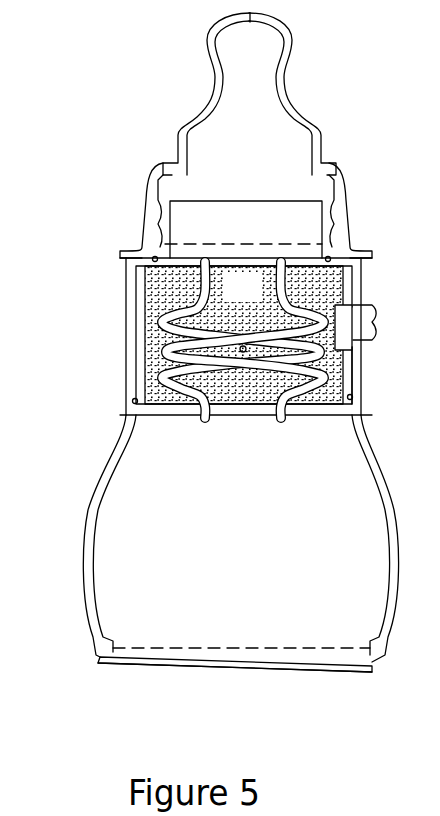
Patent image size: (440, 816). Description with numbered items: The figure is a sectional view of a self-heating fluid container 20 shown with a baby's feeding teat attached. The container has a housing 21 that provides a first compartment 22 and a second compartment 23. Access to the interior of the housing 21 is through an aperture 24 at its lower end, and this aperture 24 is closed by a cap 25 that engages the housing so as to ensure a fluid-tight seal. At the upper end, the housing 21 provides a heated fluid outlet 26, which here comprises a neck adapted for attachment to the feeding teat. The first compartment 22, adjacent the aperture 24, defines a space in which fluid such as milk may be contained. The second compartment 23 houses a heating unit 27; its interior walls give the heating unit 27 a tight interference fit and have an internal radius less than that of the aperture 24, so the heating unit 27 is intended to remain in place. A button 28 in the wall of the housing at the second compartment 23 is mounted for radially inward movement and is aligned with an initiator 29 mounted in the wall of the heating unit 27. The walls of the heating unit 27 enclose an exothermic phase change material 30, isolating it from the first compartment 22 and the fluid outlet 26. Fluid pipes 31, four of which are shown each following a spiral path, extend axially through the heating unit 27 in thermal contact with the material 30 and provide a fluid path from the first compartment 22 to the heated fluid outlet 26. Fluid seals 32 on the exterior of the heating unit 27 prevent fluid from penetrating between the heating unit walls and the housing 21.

The self-heating fluid container 20 is at (377, 143).
The housing 21 is at (358, 413).
The first compartment 22 is at (215, 557).
The second compartment 23 is at (241, 328).
The aperture 24 is at (202, 654).
The cap 25 is at (320, 667).
The heated fluid outlet 26 is at (300, 228).
The heating unit 27 is at (348, 270).
The button 28 is at (369, 340).
The initiator 29 is at (354, 303).
The exothermic phase change material 30 is at (258, 301).
The fluid pipes 31 is at (160, 373).
The fluid seals 32 is at (349, 387).